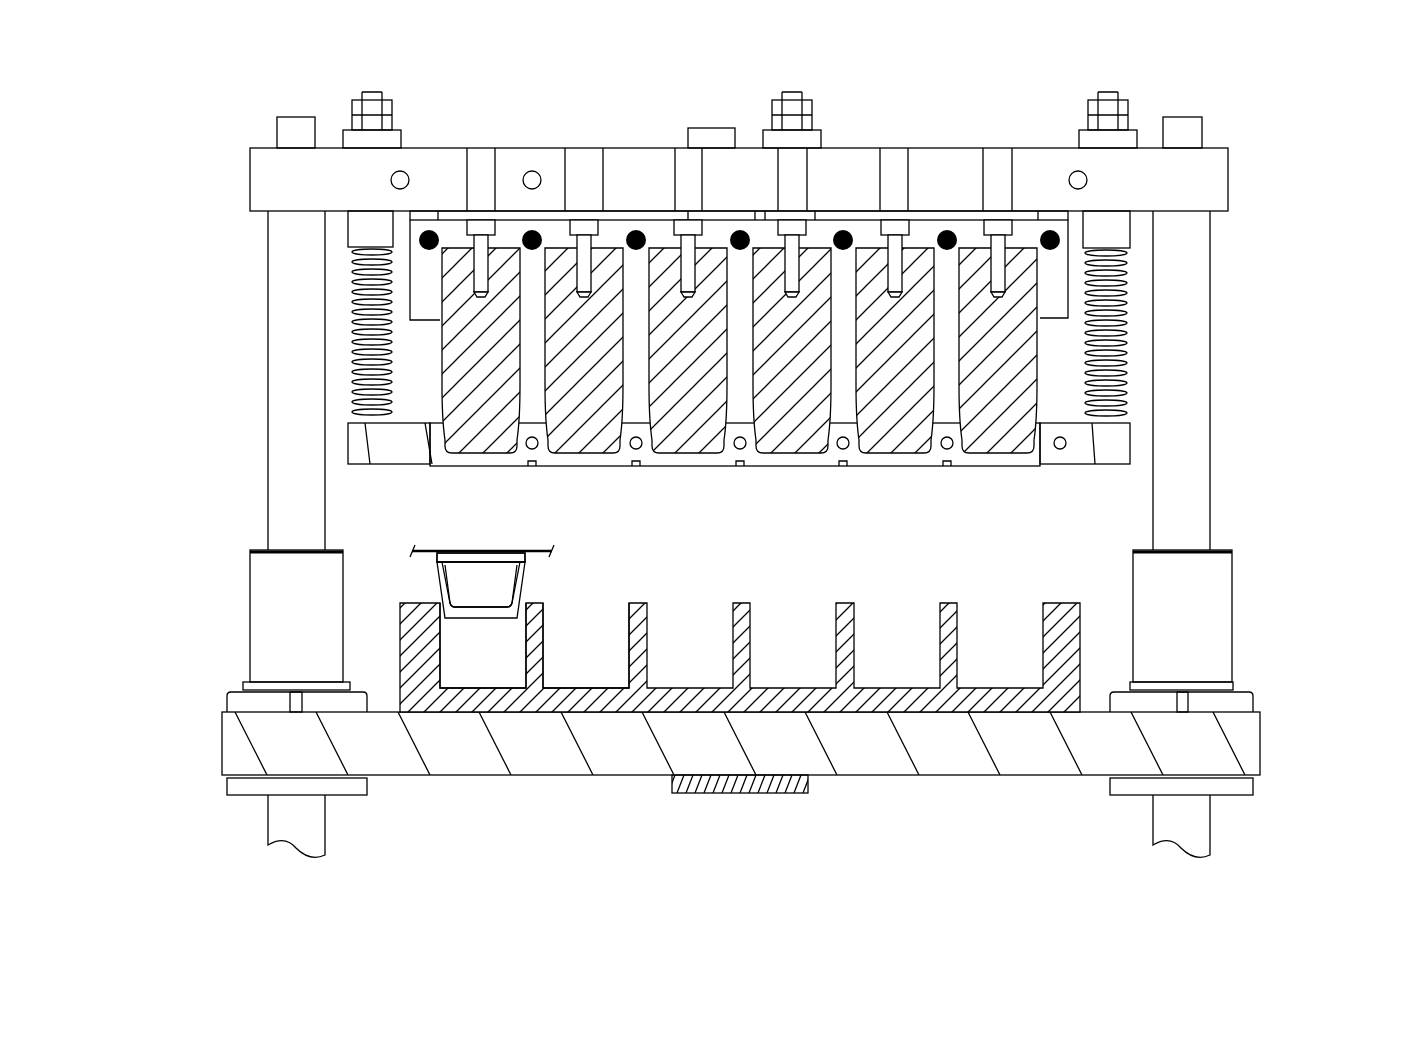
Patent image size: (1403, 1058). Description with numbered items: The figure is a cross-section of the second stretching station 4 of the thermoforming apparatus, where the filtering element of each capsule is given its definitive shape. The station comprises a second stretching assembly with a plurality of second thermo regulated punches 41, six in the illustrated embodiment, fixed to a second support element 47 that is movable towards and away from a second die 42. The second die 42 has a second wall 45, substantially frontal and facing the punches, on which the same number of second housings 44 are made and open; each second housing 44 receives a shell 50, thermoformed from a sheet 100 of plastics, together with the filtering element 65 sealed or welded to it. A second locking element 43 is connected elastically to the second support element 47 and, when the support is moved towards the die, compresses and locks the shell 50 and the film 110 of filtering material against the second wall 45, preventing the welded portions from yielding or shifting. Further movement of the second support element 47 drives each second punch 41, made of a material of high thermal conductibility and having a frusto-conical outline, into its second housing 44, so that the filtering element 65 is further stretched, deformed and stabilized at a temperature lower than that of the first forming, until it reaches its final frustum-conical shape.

The second stretching station 4 is at (218, 146).
The second thermo regulated punch 41 is at (507, 283).
The second support element 47 is at (630, 168).
The second locking element 43 is at (360, 445).
The second wall 45 is at (688, 603).
The second housing 44 is at (623, 633).
The second die 42 is at (645, 705).
The shell 50 is at (440, 588).
The filtering element 65 is at (482, 607).
The film 110 is at (549, 552).
The sheet 100 is at (543, 560).